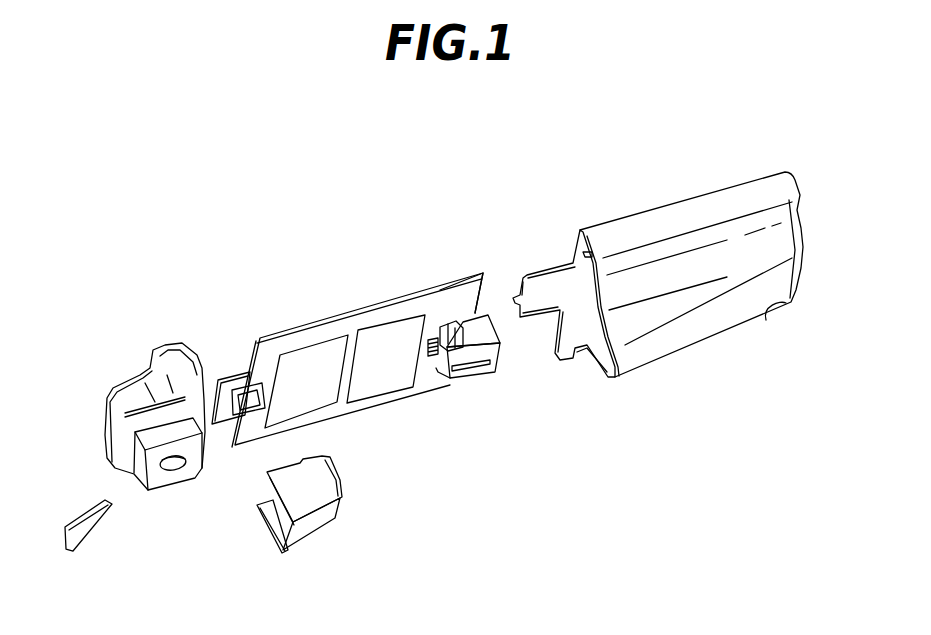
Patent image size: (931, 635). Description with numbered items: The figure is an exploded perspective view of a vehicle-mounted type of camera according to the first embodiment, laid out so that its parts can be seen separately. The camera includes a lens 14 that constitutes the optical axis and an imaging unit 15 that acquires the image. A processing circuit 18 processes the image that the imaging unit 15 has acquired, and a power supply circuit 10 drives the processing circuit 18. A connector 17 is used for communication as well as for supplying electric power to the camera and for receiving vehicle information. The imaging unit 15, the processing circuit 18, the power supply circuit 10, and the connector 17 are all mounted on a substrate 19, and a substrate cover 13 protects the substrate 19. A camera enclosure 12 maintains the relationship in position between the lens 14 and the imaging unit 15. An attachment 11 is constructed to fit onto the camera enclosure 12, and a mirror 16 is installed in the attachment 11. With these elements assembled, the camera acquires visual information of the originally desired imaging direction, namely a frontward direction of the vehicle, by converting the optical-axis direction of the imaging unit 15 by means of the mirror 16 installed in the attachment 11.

The power supply circuit 10 is at (398, 372).
The attachment 11 is at (313, 520).
The camera enclosure 12 is at (178, 350).
The substrate cover 13 is at (717, 320).
The lens 14 is at (172, 472).
The imaging unit 15 is at (252, 388).
The mirror 16 is at (95, 516).
The connector 17 is at (487, 377).
The processing circuit 18 is at (327, 363).
The substrate 19 is at (463, 300).